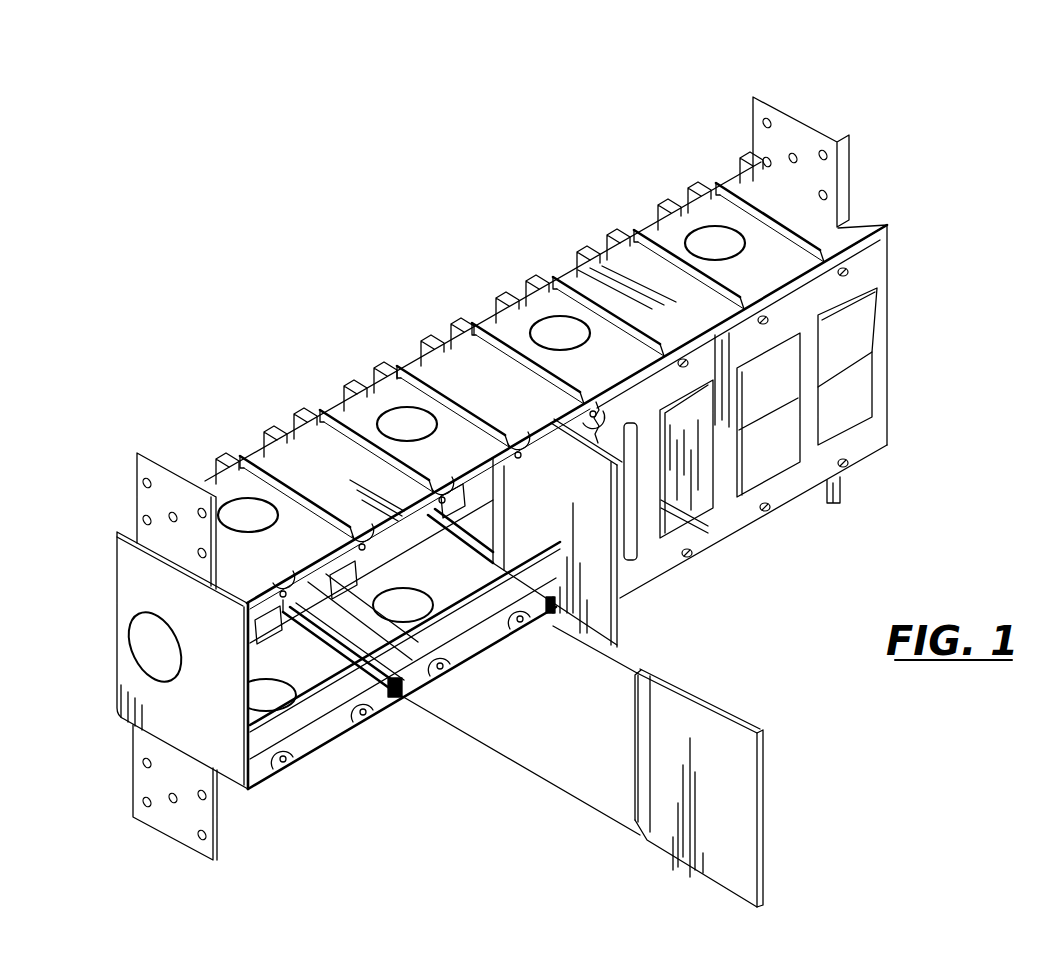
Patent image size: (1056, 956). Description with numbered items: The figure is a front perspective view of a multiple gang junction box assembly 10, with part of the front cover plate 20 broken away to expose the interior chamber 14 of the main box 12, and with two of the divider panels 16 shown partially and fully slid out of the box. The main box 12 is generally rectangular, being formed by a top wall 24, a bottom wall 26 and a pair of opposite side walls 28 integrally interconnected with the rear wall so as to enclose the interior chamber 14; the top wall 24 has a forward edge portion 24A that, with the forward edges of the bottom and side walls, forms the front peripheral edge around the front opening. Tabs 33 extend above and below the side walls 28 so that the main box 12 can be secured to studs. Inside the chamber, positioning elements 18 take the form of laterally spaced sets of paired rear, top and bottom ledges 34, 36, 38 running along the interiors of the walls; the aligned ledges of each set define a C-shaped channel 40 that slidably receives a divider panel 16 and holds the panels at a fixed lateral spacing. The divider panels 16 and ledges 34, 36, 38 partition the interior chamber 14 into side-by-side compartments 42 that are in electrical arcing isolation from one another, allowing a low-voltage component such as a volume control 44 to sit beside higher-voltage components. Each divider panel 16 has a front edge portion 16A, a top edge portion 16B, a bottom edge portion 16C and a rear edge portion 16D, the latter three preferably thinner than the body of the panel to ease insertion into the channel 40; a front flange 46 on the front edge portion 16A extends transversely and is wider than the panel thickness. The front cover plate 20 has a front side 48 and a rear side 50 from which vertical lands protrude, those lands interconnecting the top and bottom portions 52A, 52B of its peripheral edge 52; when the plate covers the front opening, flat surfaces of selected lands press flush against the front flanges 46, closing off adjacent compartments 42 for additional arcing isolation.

The multiple gang junction box assembly 10 is at (380, 290).
The main box 12 is at (553, 268).
The interior chamber 14 is at (315, 737).
The divider panel 16 is at (622, 632).
The front edge portion 16A is at (763, 740).
The top edge portion 16B is at (592, 460).
The bottom edge portion 16C is at (587, 638).
The rear edge portion 16D is at (478, 418).
The positioning element 18 is at (406, 706).
The front cover plate 20 is at (892, 432).
The top wall 24 is at (527, 323).
The forward edge portion of top wall 24A is at (367, 487).
The bottom wall 26 is at (335, 728).
The side wall 28 is at (130, 588).
The tab 33 is at (137, 482).
The rear ledge 34 is at (313, 634).
The top ledge 36 is at (563, 432).
The bottom ledge 38 is at (413, 693).
The C-shaped channel 40 is at (256, 698).
The compartment 42 is at (684, 402).
The volume control 44 is at (780, 463).
The front flange 46 is at (622, 608).
The front side of front cover plate 48 is at (875, 276).
The rear side of front cover plate 50 is at (647, 360).
The peripheral edge of front cover plate 52 is at (885, 372).
The top portion of peripheral edge 52A is at (887, 224).
The bottom portion of peripheral edge 52B is at (727, 545).